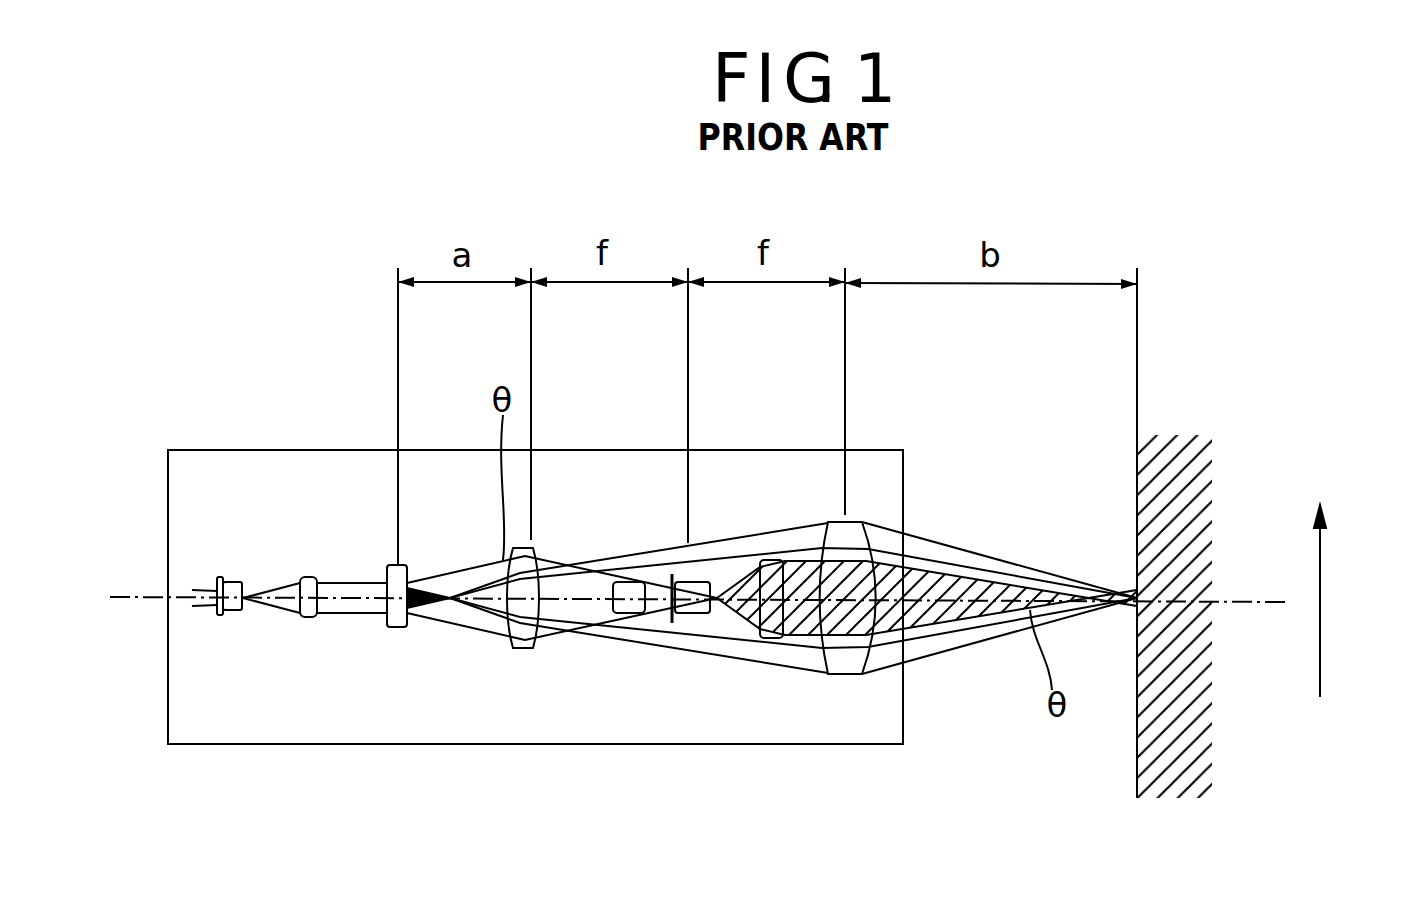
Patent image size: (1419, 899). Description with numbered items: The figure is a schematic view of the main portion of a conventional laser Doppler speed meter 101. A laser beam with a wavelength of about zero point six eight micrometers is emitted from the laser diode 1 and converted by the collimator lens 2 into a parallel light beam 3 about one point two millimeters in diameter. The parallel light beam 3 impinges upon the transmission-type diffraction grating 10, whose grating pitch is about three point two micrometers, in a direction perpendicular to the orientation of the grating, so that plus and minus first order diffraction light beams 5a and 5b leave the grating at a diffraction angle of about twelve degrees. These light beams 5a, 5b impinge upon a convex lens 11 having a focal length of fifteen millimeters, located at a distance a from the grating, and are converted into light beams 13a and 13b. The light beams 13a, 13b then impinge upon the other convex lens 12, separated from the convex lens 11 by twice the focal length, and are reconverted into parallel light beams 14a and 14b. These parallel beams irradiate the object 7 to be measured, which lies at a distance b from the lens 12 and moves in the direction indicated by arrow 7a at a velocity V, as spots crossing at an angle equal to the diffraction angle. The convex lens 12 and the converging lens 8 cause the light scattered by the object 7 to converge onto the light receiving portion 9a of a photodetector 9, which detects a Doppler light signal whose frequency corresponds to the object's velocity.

The laser Doppler speed meter 101 is at (217, 450).
The laser diode 1 is at (230, 612).
The collimator lens 2 is at (307, 618).
The parallel light beam 3 is at (346, 583).
The diffraction grating 10 is at (395, 628).
The first order diffraction light beam 5a is at (463, 573).
The first order diffraction light beam 5b is at (467, 625).
The convex lens 11 is at (522, 649).
The light beam 13a is at (577, 560).
The light beam 13b is at (587, 638).
The light receiving portion 9a is at (718, 553).
The photodetector 9 is at (688, 624).
The converging lens 8 is at (768, 640).
The convex lens 12 is at (848, 676).
The parallel light beam 14a is at (975, 555).
The parallel light beam 14b is at (965, 645).
The moving object to be measured 7 is at (1178, 773).
The arrow 7a is at (1320, 658).